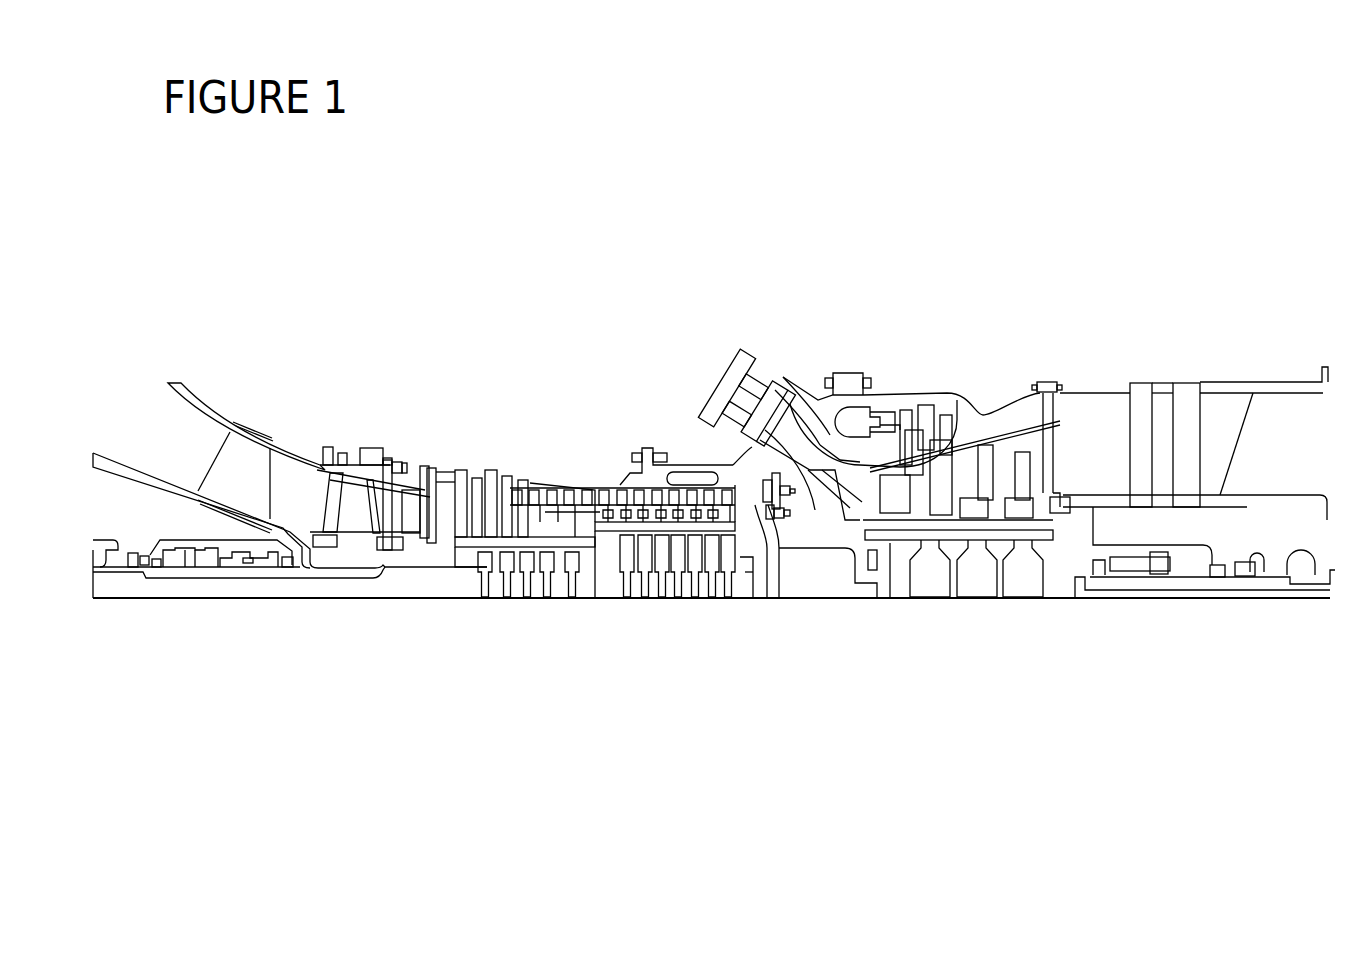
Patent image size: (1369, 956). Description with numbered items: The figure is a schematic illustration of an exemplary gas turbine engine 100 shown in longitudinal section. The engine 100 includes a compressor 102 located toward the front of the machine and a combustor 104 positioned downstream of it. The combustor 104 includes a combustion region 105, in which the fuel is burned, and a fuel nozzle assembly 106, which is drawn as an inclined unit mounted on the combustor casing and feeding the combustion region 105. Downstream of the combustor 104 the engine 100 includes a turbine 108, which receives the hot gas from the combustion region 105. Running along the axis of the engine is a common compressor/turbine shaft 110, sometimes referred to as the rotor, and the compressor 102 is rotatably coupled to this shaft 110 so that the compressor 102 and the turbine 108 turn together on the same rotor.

The gas turbine engine 100 is at (390, 230).
The compressor 102 is at (462, 472).
The combustor 104 is at (846, 318).
The combustion region 105 is at (788, 410).
The fuel nozzle assembly 106 is at (757, 365).
The turbine 108 is at (985, 417).
The common compressor/turbine shaft 110 is at (472, 552).